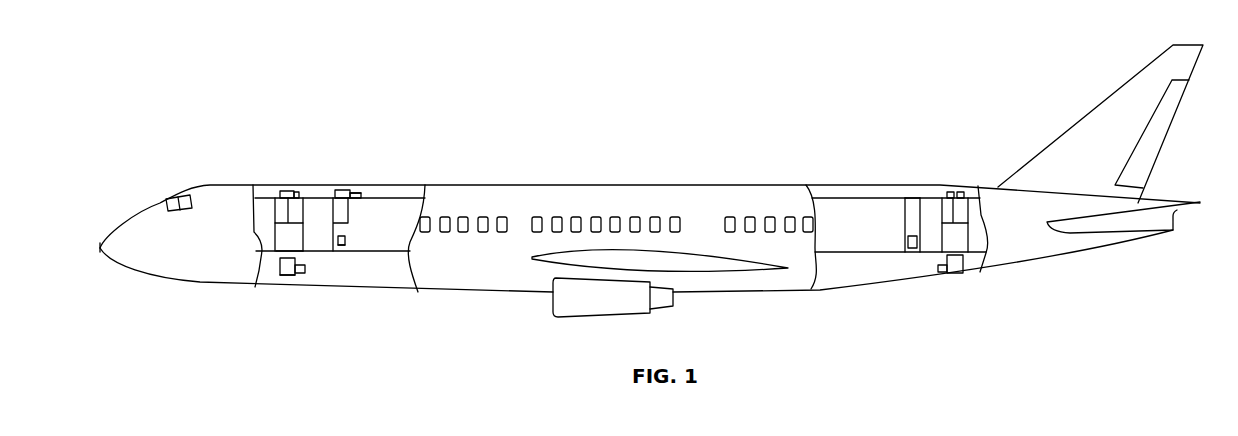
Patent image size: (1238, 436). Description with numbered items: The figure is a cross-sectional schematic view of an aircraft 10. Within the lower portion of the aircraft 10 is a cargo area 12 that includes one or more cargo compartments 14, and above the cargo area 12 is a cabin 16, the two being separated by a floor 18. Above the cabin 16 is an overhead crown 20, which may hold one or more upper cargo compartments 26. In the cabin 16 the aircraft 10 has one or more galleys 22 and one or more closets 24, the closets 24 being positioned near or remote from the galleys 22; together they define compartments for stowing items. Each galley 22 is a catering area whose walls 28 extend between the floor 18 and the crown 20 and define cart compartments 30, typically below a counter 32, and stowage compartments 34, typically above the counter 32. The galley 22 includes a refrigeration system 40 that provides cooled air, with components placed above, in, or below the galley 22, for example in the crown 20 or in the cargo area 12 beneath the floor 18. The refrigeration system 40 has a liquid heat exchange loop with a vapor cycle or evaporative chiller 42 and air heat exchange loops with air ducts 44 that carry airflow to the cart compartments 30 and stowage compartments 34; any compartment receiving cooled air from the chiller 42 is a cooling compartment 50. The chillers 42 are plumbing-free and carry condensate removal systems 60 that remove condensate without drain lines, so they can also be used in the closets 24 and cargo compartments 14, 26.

The aircraft 10 is at (715, 100).
The cargo area 12 is at (380, 288).
The cargo compartment 14 is at (281, 268).
The cabin 16 is at (855, 212).
The floor 18 is at (410, 258).
The crown 20 is at (425, 186).
The galley 22 is at (333, 212).
The closet 24 is at (351, 193).
The cargo compartment 26 is at (356, 194).
The wall 28 is at (339, 247).
The cart compartment 30 is at (270, 240).
The counter 32 is at (344, 250).
The stowage compartment 34 is at (276, 221).
The refrigeration system 40 is at (276, 213).
The chiller 42 is at (276, 188).
The air duct 44 is at (276, 224).
The cooling compartment 50 is at (358, 195).
The condensate removal system 60 is at (296, 194).